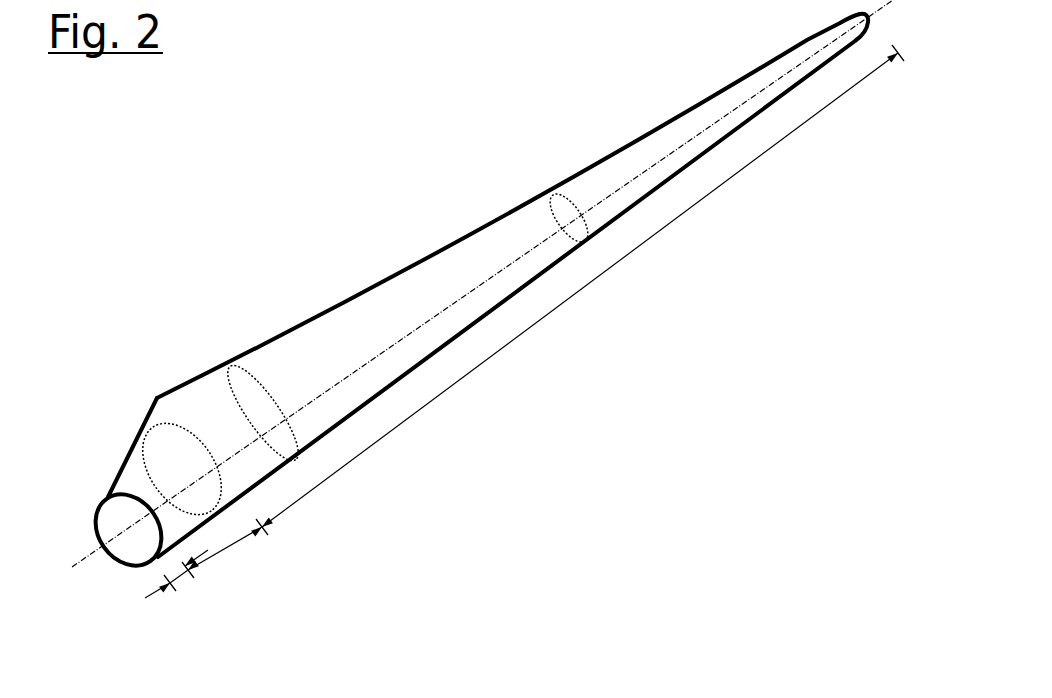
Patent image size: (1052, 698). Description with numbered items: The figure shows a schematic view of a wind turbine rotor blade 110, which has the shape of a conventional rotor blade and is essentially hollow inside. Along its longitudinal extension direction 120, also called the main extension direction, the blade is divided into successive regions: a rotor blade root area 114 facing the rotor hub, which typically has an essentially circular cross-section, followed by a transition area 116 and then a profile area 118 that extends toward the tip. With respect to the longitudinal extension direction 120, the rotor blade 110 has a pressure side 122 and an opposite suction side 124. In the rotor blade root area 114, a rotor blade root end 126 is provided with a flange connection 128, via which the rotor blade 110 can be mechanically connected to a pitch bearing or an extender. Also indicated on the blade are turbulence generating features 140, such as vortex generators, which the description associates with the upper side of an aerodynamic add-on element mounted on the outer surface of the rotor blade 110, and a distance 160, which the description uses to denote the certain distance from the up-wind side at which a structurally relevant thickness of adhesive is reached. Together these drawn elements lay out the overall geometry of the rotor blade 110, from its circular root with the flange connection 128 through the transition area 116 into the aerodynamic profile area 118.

The rotor blade 110 is at (512, 286).
The rotor blade root area 114 is at (173, 578).
The transition area 116 is at (237, 550).
The profile area 118 is at (567, 312).
The longitudinal extension direction 120 is at (392, 342).
The pressure side 122 is at (605, 177).
The suction side 124 is at (403, 245).
The rotor blade root end 126 is at (132, 535).
The flange connection 128 is at (144, 525).
The turbulence generating features 140 is at (508, 206).
The distance 160 is at (349, 361).